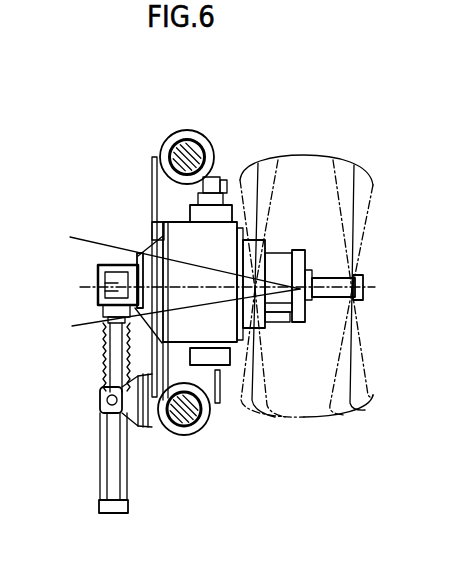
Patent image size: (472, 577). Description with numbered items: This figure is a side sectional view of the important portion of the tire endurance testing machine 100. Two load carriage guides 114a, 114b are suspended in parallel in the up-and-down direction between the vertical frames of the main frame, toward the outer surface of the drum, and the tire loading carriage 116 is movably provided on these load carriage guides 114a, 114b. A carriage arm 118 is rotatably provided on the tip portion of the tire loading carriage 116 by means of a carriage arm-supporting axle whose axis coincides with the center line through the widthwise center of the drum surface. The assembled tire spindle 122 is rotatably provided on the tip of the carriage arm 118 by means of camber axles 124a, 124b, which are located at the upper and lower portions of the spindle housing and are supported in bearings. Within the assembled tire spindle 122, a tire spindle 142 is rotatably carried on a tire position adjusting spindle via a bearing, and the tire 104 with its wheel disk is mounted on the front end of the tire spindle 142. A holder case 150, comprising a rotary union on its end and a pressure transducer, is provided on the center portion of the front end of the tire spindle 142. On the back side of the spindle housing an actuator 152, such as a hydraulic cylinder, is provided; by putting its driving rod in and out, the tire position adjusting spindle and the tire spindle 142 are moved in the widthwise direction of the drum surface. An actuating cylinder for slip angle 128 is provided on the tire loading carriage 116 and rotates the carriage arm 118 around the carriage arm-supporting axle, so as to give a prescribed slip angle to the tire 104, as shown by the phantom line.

The wheel suspension/steering assembly 100 is at (227, 75).
The tire 104 is at (295, 156).
The load carriage guide 114a is at (182, 147).
The load carriage guide 114b is at (181, 420).
The tire loading carriage 116 is at (163, 191).
The carriage arm 118 is at (218, 404).
The assembled tire spindle 122 is at (152, 227).
The camber axle 124a is at (226, 205).
The camber axle 124b is at (206, 360).
The actuating cylinder for slip angle 128 is at (104, 470).
The tire spindle 142 is at (281, 322).
The holder case 150 is at (333, 283).
The actuator 152 is at (150, 268).